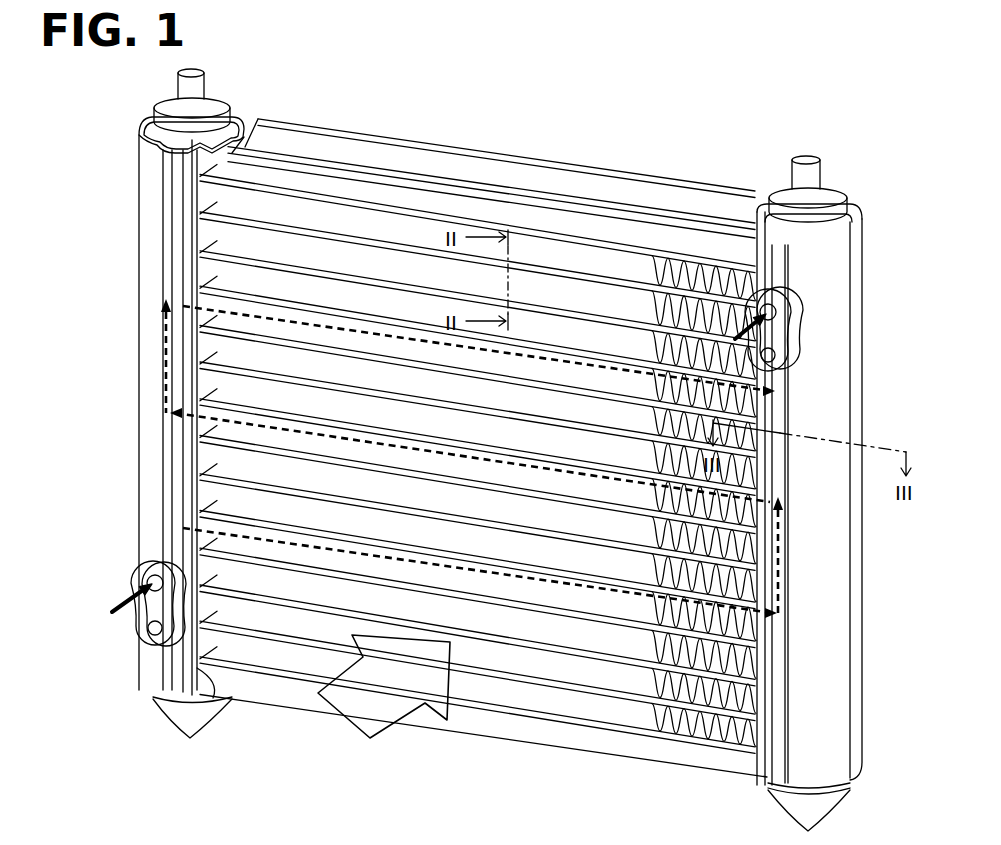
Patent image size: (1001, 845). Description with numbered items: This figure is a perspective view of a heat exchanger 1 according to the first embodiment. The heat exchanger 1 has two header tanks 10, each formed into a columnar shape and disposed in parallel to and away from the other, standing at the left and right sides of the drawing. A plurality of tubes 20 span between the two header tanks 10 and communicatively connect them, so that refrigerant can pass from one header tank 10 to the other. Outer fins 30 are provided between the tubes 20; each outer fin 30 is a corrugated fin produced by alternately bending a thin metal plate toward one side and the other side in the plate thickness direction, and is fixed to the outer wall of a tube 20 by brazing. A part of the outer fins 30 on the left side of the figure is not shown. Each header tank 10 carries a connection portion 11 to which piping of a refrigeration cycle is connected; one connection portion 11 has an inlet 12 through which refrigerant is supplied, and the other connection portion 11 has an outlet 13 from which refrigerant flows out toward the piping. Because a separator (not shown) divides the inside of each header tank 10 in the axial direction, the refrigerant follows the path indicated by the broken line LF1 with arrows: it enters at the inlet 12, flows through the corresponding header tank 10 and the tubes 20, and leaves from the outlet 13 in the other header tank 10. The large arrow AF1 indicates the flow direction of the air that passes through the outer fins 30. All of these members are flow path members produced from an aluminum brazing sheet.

The heat exchanger 1 is at (770, 85).
The header tank 10 is at (139, 363).
The connection portion 11 is at (142, 622).
The inlet 12 is at (146, 570).
The outlet 13 is at (778, 301).
The tube 20 is at (388, 280).
The outer fin 30 is at (645, 300).
The air flow direction arrow AF1 is at (385, 733).
The refrigerant flow line LF1 is at (538, 577).